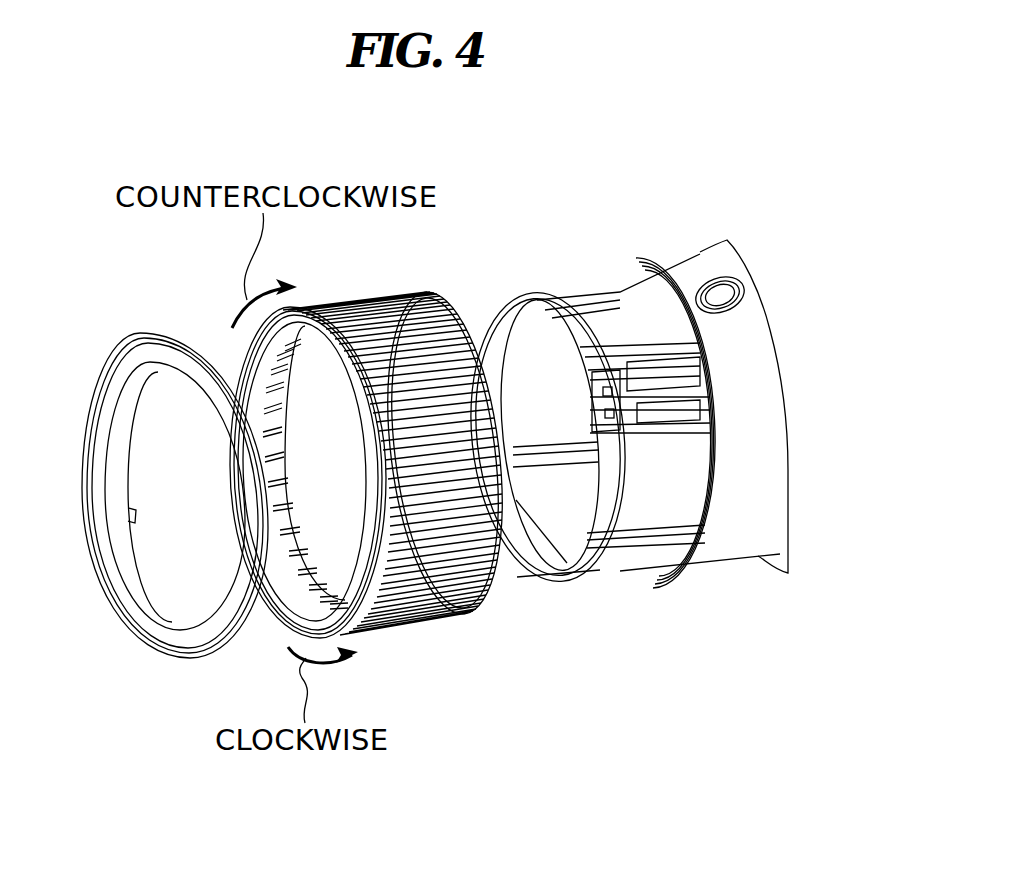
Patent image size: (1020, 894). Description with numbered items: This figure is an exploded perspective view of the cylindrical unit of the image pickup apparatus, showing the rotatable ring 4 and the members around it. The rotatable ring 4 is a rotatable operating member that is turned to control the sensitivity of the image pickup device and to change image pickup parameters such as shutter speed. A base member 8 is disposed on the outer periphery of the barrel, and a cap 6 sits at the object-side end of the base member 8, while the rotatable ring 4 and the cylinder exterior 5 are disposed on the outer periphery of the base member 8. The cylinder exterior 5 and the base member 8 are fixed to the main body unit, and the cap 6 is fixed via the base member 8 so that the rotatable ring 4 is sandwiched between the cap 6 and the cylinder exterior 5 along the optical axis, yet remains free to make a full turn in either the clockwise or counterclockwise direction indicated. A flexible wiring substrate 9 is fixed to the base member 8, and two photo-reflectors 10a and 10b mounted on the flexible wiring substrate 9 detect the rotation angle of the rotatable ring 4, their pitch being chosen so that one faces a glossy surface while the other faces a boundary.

The rotatable ring 4 is at (343, 300).
The cylinder exterior 5 is at (700, 263).
The cap 6 is at (141, 332).
The base member 8 is at (538, 293).
The flexible wiring substrate 9 is at (652, 397).
The photo-reflector 10a is at (605, 386).
The photo-reflector 10b is at (612, 420).